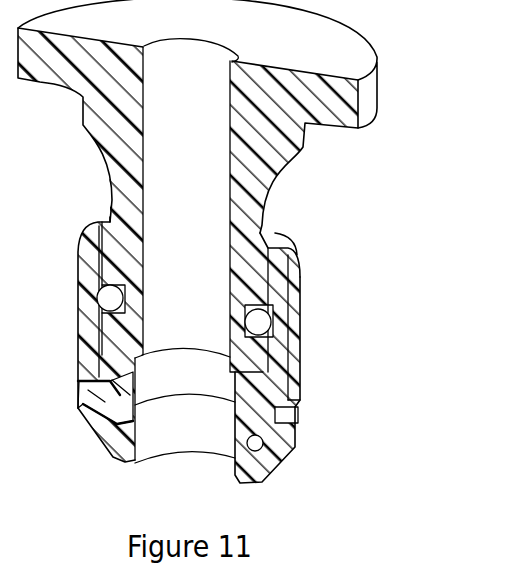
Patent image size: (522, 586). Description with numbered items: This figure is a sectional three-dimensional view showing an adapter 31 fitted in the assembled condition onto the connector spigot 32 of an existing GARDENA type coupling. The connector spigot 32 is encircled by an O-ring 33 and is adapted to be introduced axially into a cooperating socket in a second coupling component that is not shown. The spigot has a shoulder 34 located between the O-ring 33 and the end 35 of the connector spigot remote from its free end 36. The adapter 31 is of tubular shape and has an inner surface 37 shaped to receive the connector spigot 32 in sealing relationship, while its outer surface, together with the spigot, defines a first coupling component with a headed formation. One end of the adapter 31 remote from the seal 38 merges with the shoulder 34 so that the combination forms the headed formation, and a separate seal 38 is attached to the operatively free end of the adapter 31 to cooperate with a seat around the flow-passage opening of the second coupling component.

The end of the connector spigot 35 is at (287, 132).
The shoulder 34 is at (272, 248).
The connector spigot 32 is at (296, 286).
The adapter 31 is at (297, 303).
The O-ring 33 is at (262, 325).
The inner surface 37 is at (270, 348).
The free end 36 is at (268, 360).
The seal 38 is at (272, 452).